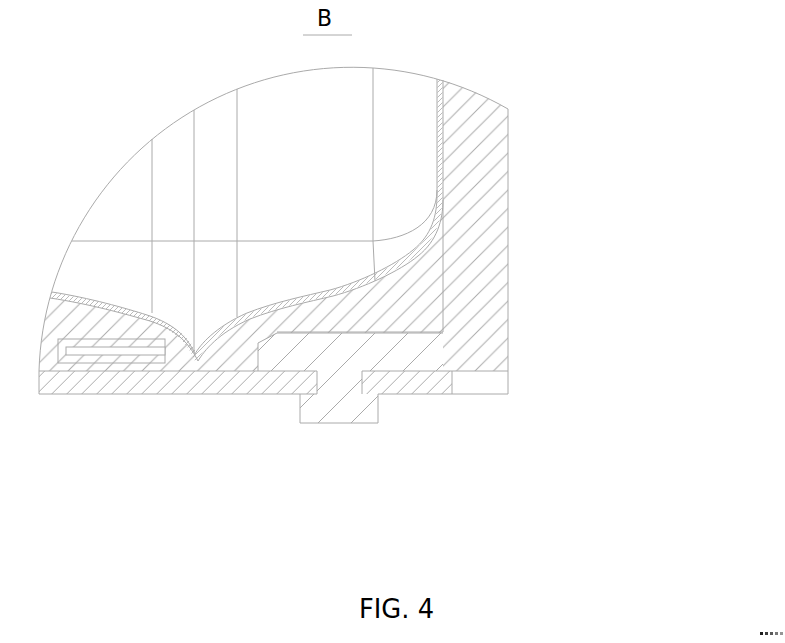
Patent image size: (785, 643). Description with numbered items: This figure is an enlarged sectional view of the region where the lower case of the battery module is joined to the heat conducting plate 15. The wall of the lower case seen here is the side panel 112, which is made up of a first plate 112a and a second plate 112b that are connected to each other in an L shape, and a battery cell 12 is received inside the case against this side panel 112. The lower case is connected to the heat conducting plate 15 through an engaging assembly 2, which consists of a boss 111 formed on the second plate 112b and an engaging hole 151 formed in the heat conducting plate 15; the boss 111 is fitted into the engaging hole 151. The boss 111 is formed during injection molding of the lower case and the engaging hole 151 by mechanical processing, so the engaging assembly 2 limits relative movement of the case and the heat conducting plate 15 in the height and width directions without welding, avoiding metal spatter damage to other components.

The battery cell 12 is at (405, 149).
The side panel 112 is at (392, 245).
The first plate 112a is at (480, 233).
The second plate 112b is at (368, 360).
The heat conducting plate 15 is at (235, 394).
The boss 111 is at (339, 454).
The engaging hole 151 is at (362, 384).
The engaging assembly 2 is at (412, 465).